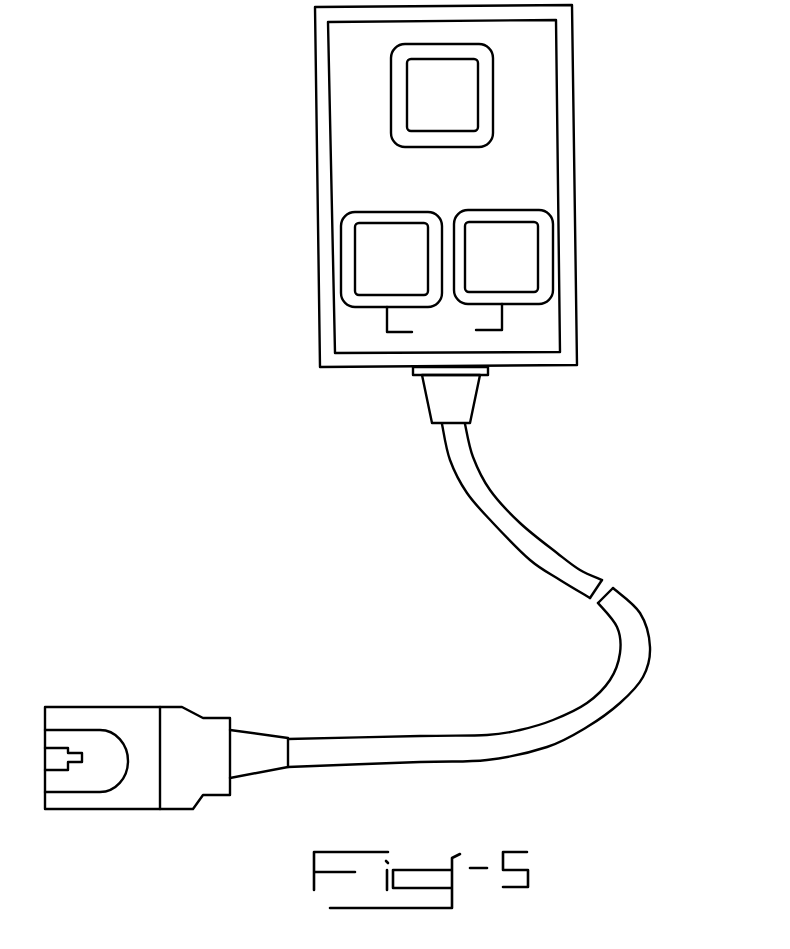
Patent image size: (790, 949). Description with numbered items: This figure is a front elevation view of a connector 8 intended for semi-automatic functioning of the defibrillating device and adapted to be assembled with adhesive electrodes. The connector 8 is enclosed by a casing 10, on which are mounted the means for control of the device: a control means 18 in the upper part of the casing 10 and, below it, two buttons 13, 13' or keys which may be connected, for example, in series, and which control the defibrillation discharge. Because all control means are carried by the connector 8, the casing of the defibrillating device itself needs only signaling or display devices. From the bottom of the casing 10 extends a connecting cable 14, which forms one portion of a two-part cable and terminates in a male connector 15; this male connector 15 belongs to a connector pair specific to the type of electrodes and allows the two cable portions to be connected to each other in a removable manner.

The connector 8 is at (593, 201).
The casing 10 is at (574, 148).
The means for control 18 is at (456, 96).
The button 13 is at (509, 272).
The button 13' is at (570, 270).
The connecting cable 14 is at (503, 512).
The male connector 15 is at (137, 722).